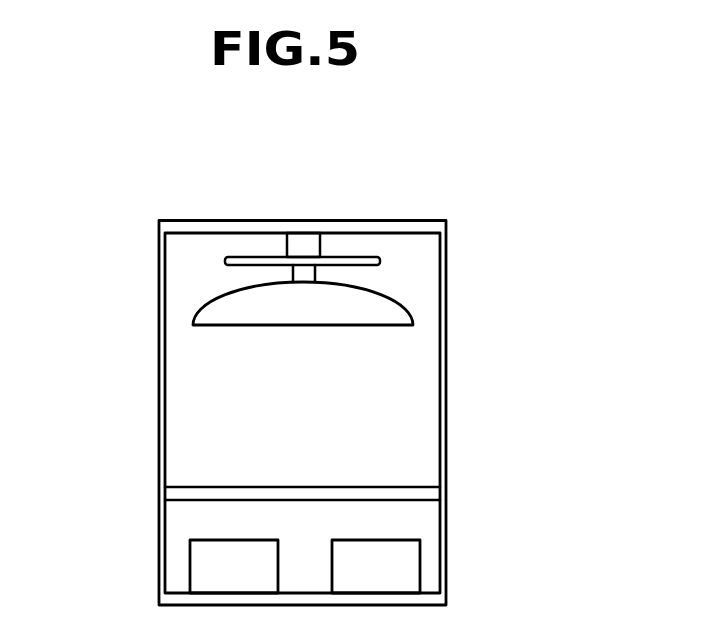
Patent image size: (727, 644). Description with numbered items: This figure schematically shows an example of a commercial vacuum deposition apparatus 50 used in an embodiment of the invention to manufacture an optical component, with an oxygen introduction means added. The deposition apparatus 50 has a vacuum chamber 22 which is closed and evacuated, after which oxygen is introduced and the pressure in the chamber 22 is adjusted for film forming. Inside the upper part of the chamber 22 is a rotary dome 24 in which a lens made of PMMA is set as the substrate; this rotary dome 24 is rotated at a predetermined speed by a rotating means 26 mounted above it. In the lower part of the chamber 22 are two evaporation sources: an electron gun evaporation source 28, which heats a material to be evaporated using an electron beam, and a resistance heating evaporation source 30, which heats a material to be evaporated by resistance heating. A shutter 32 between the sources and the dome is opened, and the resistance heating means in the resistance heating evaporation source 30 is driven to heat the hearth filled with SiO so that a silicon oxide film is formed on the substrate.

The vacuum deposition apparatus 50 is at (481, 188).
The vacuum chamber 22 is at (158, 443).
The rotary dome 24 is at (217, 299).
The rotating means 26 is at (303, 247).
The electron gun evaporation source 28 is at (432, 569).
The resistance heating evaporation source 30 is at (178, 572).
The shutter 32 is at (427, 495).